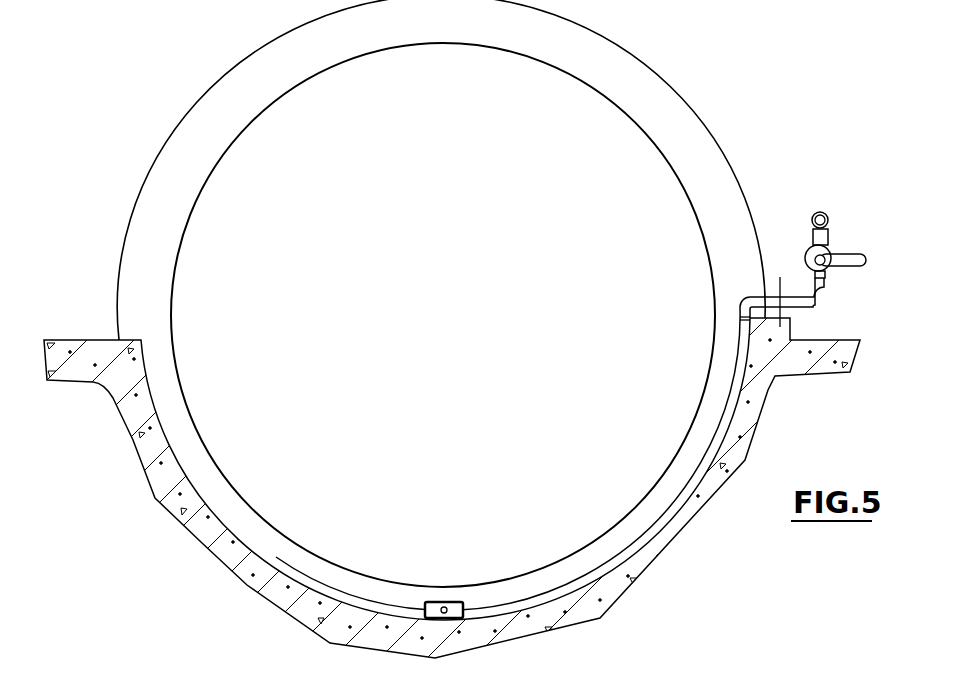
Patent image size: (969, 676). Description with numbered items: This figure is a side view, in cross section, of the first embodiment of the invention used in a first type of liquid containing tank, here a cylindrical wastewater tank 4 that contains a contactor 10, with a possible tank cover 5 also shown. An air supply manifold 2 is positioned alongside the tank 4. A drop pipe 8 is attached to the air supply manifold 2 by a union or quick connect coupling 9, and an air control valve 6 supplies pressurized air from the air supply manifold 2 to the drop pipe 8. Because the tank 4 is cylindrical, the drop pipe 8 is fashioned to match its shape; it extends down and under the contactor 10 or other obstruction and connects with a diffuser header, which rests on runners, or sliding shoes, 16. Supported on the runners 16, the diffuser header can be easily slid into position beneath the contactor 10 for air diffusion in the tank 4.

The air supply manifold 2 is at (825, 212).
The tank 4 is at (80, 340).
The tank cover 5 is at (170, 140).
The air control valve 6 is at (832, 249).
The drop pipe 8 is at (715, 447).
The union or quick connect coupling 9 is at (828, 276).
The contactor 10 is at (600, 133).
The runners (sliding shoes) 16 is at (423, 607).